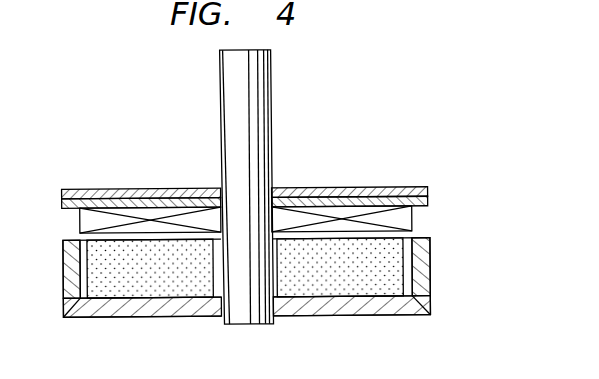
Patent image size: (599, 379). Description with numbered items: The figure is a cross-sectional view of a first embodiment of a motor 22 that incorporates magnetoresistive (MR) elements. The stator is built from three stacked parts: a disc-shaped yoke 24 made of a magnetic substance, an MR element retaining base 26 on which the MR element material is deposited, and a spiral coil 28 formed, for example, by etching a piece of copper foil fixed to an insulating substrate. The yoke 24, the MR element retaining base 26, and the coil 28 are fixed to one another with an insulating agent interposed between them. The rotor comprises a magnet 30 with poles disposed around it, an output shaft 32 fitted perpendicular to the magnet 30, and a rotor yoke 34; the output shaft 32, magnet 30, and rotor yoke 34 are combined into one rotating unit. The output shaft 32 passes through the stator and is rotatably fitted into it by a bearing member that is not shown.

The motor 22 is at (313, 329).
The disc-shaped yoke 24 is at (428, 191).
The MR element retaining base 26 is at (428, 201).
The spiral coil 28 is at (406, 218).
The magnet 30 is at (400, 258).
The output shaft 32 is at (262, 133).
The rotor yoke 34 is at (427, 302).